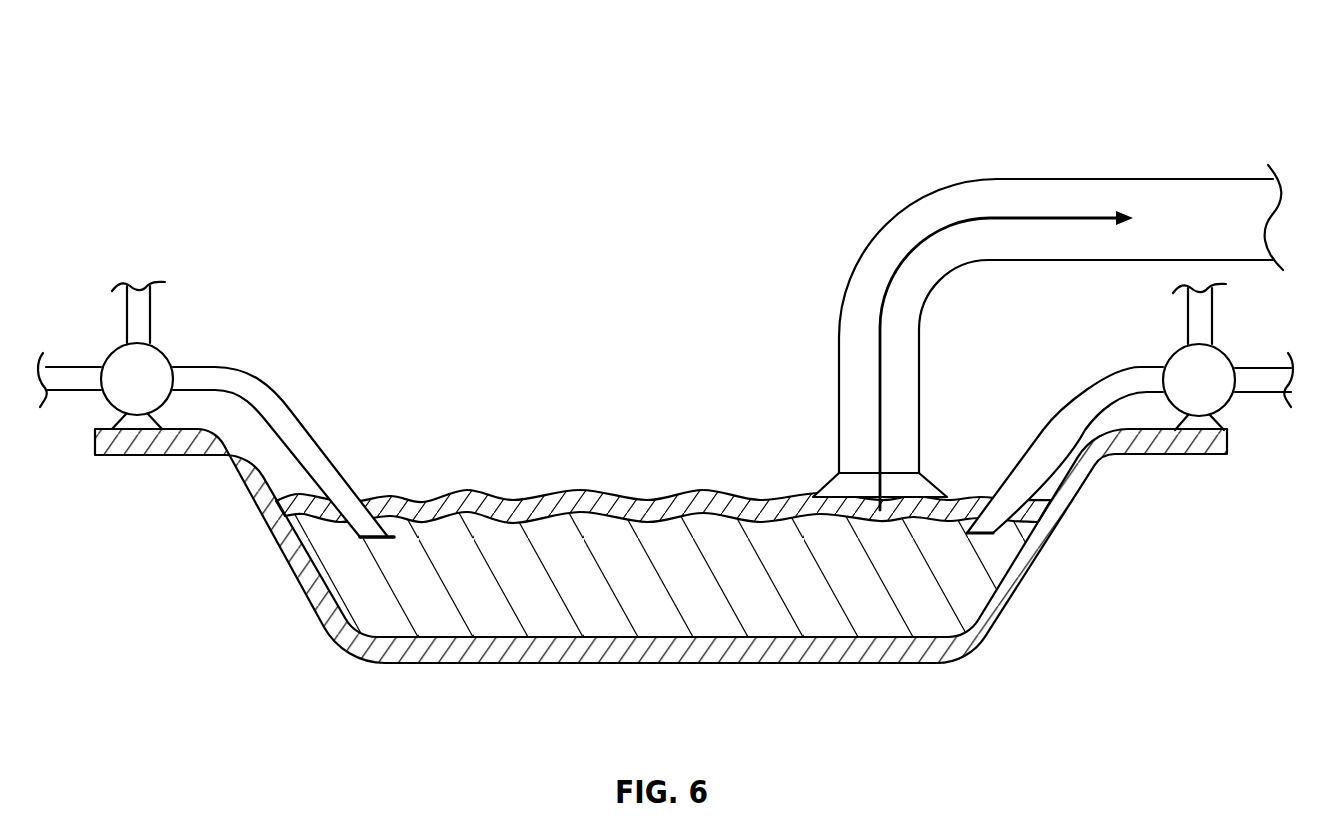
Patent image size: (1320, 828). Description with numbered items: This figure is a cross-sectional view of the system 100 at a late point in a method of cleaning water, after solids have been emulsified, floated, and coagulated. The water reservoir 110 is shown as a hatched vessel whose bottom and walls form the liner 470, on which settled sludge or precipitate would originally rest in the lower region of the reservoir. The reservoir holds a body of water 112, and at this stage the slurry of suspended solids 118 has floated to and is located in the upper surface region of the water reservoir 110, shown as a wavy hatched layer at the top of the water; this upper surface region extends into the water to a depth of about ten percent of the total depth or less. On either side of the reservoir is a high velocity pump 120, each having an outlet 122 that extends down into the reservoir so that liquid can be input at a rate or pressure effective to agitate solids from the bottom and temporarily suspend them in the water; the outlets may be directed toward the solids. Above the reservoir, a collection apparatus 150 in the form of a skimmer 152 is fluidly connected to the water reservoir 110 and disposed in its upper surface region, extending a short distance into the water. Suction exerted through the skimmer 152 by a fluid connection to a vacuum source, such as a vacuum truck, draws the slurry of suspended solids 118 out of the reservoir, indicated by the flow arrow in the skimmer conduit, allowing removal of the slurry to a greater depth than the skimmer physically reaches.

The system 100 is at (665, 401).
The water reservoir 110 is at (661, 595).
The liner 470 is at (430, 652).
The water 112 is at (407, 598).
The slurry of suspended solids 118 is at (608, 491).
The high velocity pump 120 is at (155, 363).
The outlet 122 is at (297, 440).
The collection apparatus 150 is at (1048, 321).
The skimmer 152 is at (1057, 178).